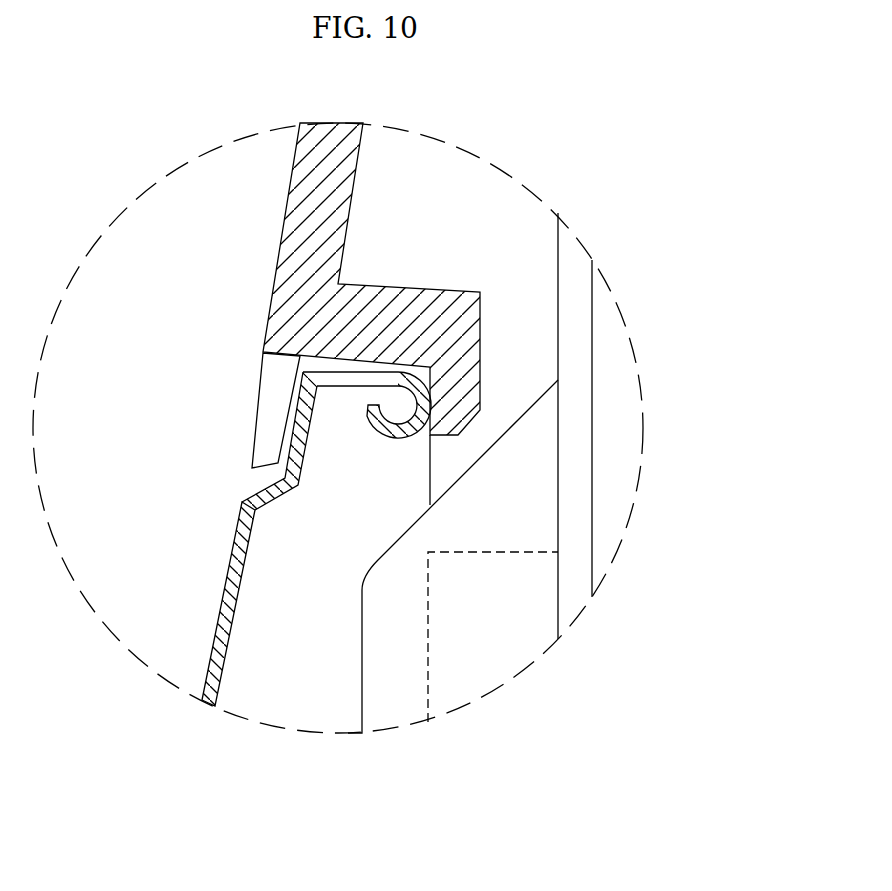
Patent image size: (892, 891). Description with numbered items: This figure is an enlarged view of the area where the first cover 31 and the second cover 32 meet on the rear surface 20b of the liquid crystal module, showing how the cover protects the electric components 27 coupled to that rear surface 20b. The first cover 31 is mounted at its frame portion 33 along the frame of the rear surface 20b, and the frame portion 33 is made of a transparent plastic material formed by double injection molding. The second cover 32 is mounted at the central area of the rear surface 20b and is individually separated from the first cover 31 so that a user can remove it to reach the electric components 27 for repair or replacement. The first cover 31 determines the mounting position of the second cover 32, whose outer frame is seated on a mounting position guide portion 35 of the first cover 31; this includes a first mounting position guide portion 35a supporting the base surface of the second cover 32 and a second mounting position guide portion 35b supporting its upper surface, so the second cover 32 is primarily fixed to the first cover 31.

The frame portion 33 is at (302, 182).
The first cover 31 is at (321, 262).
The mounting position guide portion 35 is at (446, 431).
The first mounting position guide portion 35a is at (483, 392).
The second mounting position guide portion 35b is at (267, 428).
The second cover 32 is at (213, 665).
The rear surface 20b is at (593, 516).
The electric components 27 is at (428, 682).